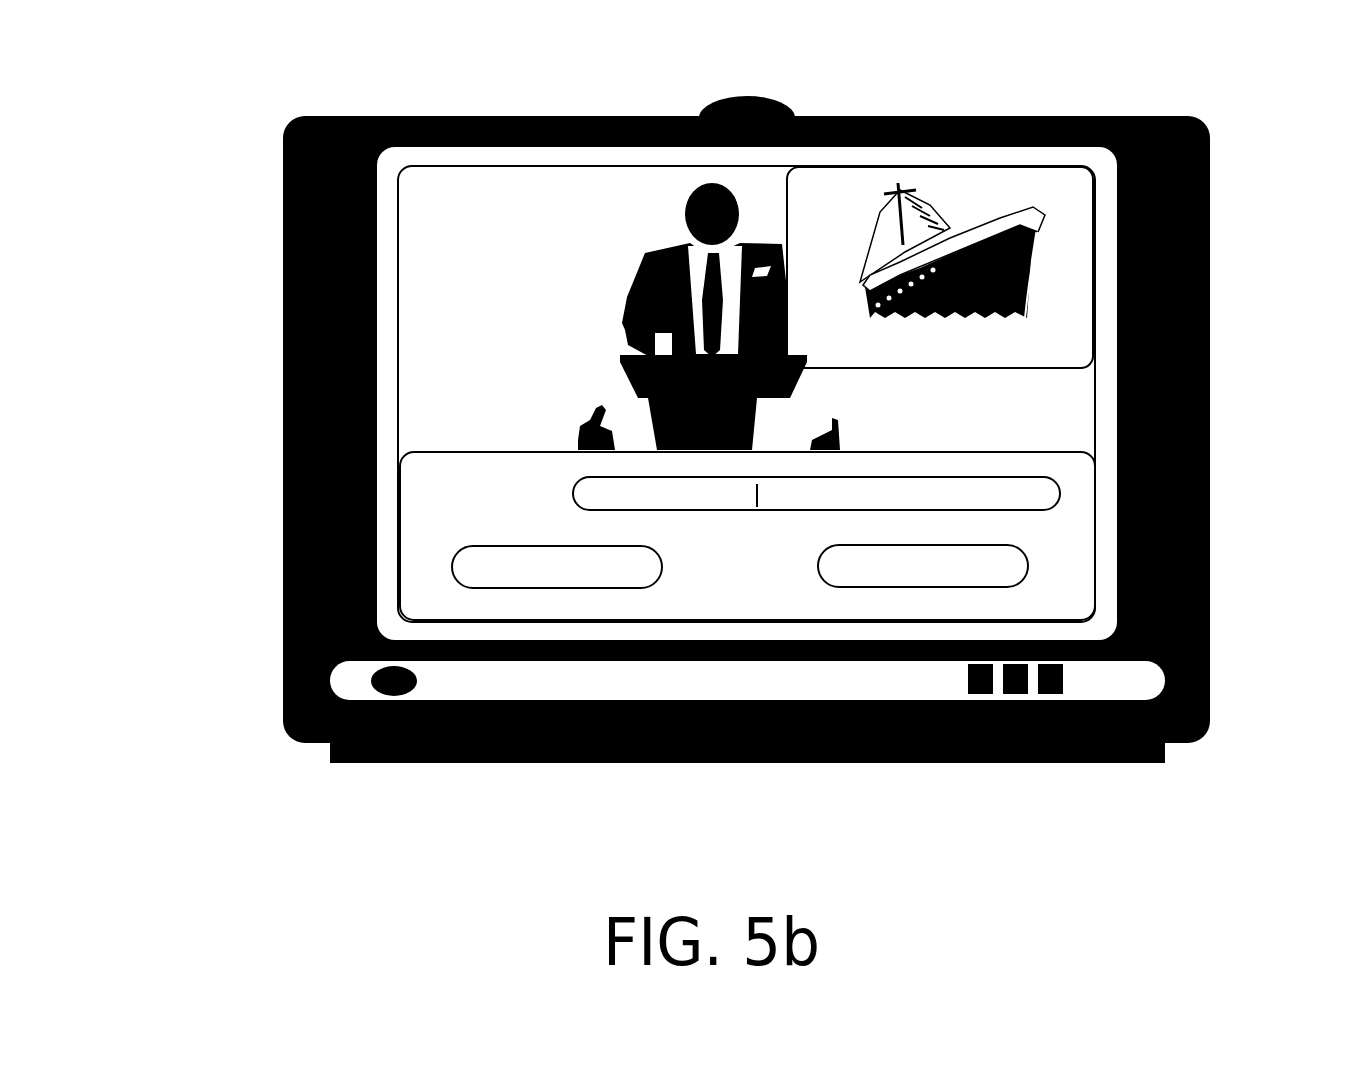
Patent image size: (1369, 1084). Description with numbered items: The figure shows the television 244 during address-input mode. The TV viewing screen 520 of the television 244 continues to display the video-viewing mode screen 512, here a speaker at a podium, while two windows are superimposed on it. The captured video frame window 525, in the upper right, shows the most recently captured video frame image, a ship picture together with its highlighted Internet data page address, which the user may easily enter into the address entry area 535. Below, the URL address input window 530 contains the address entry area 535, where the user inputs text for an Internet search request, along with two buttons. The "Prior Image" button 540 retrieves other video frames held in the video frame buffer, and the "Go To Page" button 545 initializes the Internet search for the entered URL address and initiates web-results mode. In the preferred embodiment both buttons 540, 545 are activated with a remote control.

The television 244 is at (225, 772).
The display screen 520 is at (247, 425).
The video-viewing mode screen 512 is at (543, 252).
The captured video frame window 525 is at (1073, 283).
The URL address input window 530 is at (1075, 537).
The address entry area 535 is at (902, 493).
The "Prior Image" button 540 is at (545, 583).
The "Go To Page" button 545 is at (1017, 567).